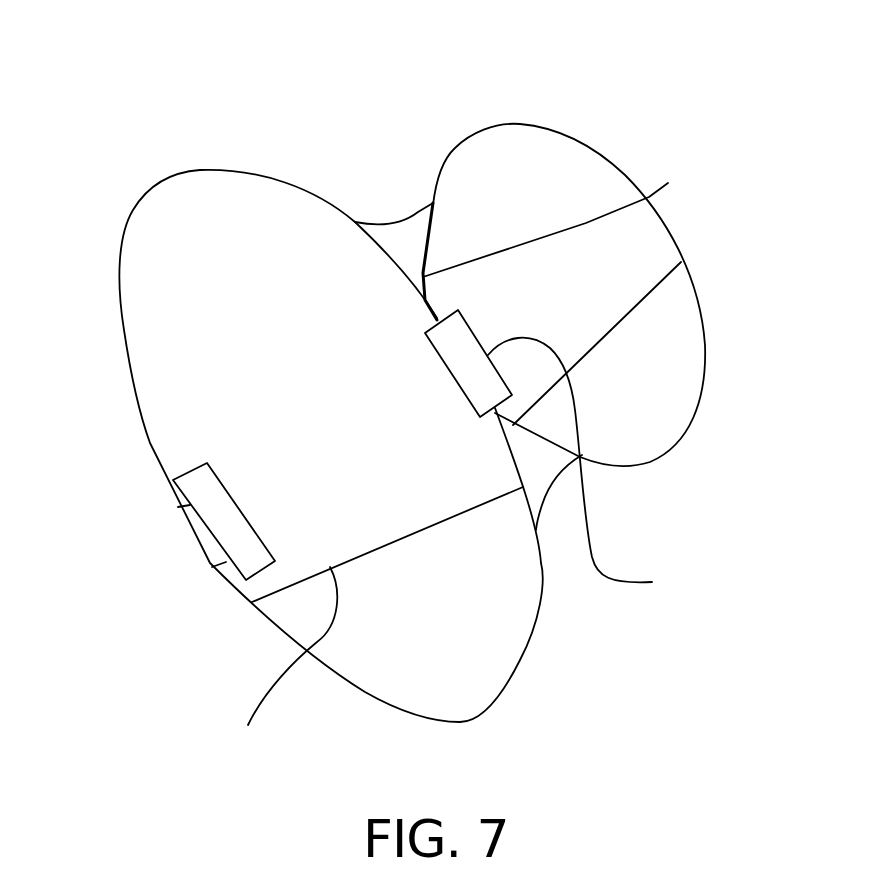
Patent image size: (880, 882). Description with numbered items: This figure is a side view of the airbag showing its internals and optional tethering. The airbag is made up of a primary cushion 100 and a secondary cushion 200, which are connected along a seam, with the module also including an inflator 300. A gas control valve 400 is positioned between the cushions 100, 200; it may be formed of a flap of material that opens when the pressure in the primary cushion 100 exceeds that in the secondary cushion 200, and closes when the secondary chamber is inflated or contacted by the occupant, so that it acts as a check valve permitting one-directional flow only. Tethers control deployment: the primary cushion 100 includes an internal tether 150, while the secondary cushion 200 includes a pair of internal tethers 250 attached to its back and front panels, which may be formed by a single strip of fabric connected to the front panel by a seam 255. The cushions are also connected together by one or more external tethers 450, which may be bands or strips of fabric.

The primary cushion 100 is at (198, 212).
The internal tether 150 is at (371, 631).
The secondary cushion 200 is at (507, 148).
The internal tethers 250 is at (587, 217).
The seam 255 is at (581, 217).
The inflator 300 is at (215, 495).
The valve 400 is at (580, 398).
The external tethers 450 is at (398, 222).